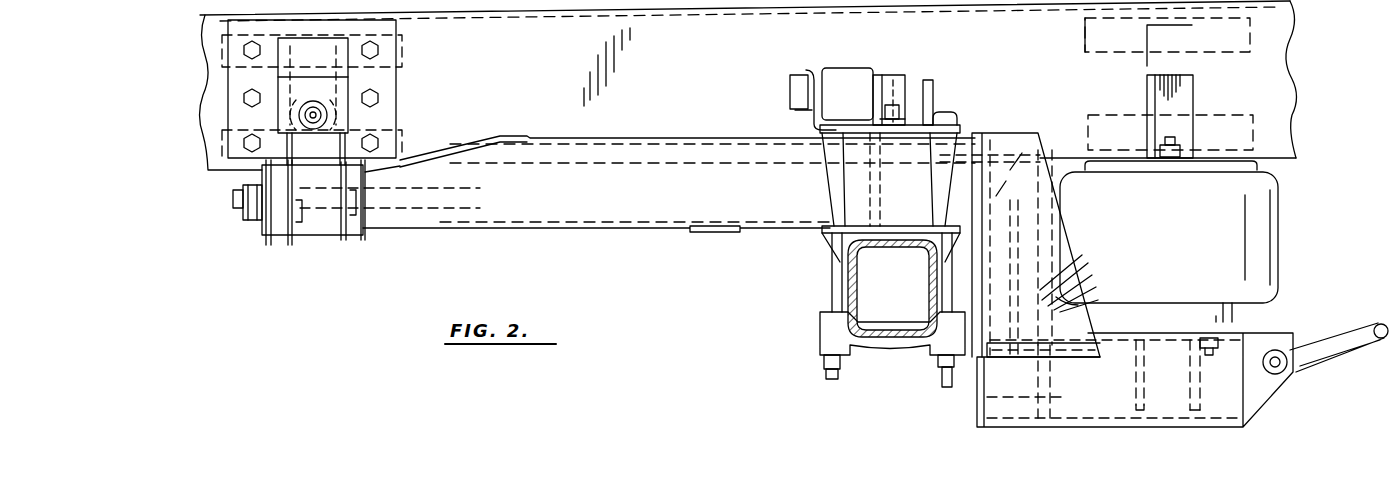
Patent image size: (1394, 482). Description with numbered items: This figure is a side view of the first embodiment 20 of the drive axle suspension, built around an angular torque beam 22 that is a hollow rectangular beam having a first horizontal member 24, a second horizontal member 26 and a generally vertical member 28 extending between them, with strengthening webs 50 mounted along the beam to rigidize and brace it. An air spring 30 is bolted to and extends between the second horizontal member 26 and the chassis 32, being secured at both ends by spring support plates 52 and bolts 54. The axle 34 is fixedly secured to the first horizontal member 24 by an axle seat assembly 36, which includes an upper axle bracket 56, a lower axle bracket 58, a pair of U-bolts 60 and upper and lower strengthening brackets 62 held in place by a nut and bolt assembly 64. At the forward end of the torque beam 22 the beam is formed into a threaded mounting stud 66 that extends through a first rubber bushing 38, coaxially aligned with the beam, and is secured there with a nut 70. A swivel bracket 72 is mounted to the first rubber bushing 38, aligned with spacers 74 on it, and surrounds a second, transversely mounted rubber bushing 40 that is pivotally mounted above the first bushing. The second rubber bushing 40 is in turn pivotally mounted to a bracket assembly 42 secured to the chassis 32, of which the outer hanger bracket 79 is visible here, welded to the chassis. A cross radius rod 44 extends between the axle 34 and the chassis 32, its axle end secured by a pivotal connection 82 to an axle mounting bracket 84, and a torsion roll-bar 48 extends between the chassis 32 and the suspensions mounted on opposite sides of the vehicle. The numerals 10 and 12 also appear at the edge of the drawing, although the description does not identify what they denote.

The trailer hitch assembly 10 is at (335, 0).
The trailer tongue 12 is at (272, 0).
The first embodiment of the drive axle suspension 20 is at (630, 250).
The angular torque beam 22 is at (530, 230).
The first horizontal member 24 is at (620, 167).
The second horizontal member 26 is at (1212, 426).
The generally vertical member 28 is at (970, 310).
The air spring 30 is at (1268, 231).
The chassis 32 is at (1283, 58).
The axle 34 is at (895, 332).
The axle seat assembly 36 is at (814, 344).
The first rubber bushing 38 is at (278, 240).
The second rubber bushing 40 is at (350, 115).
The bracket assembly 42 is at (272, 74).
The cross radius rod 44 is at (848, 66).
The torsion roll-bar 48 is at (1356, 324).
The strengthening webs 50 is at (1130, 414).
The spring support plates 52 is at (1226, 163).
The bolts 54 is at (1178, 140).
The upper axle bracket 56 is at (828, 240).
The lower axle bracket 58 is at (828, 326).
The U-bolts 60 is at (926, 288).
The upper and lower strengthening brackets 62 is at (928, 116).
The nut and bolt assembly 64 is at (896, 112).
The threaded mounting stud 66 is at (232, 200).
The nut 70 is at (250, 212).
The swivel bracket 72 is at (348, 142).
The spacers 74 is at (308, 240).
The outer hanger bracket 79 is at (332, 92).
The pivotal connection 82 is at (868, 76).
The axle mounting bracket 84 is at (815, 70).